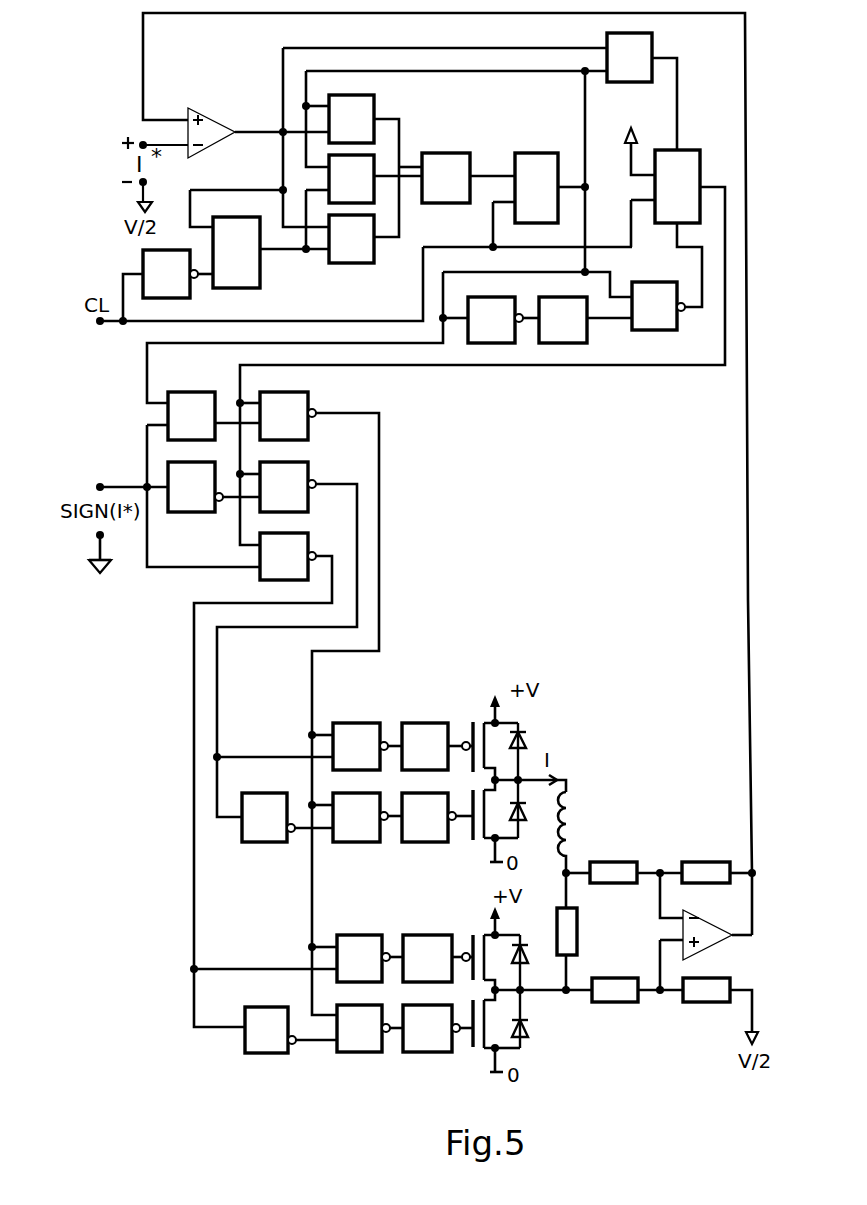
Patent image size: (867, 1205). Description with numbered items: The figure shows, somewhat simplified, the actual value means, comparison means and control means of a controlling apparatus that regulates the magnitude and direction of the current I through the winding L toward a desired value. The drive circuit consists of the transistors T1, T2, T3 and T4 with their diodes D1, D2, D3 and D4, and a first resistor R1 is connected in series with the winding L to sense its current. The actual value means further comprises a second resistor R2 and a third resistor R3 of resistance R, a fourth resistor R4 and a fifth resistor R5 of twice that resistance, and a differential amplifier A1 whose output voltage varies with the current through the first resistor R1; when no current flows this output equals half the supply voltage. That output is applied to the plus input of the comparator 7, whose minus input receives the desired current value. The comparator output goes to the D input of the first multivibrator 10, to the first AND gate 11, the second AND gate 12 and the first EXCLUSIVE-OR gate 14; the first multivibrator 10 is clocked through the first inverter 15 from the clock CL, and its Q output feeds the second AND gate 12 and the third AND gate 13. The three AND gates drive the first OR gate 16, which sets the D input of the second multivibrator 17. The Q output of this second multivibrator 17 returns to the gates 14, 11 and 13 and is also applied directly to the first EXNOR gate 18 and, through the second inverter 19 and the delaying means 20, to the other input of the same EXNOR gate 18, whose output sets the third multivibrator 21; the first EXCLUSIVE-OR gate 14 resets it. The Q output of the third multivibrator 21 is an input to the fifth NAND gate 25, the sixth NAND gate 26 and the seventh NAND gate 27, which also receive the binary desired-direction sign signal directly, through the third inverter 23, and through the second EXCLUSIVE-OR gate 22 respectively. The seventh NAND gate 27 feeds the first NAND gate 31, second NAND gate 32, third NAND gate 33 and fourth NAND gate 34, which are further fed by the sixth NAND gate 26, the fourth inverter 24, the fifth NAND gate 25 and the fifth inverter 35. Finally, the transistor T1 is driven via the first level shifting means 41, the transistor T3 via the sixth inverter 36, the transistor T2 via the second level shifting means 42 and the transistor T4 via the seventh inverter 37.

The comparator 7 is at (212, 112).
The first multivibrator 10 is at (250, 268).
The first AND gate 11 is at (362, 113).
The second AND gate 12 is at (368, 253).
The third AND gate 13 is at (368, 163).
The first EXCLUSIVE-OR gate 14 is at (648, 55).
The first inverter 15 is at (174, 284).
The first OR gate 16 is at (440, 157).
The second multivibrator 17 is at (538, 165).
The first EXNOR gate 18 is at (664, 330).
The second inverter 19 is at (499, 345).
The delaying means 20 is at (578, 345).
The third multivibrator 21 is at (694, 165).
The second EXCLUSIVE-OR gate 22 is at (186, 395).
The third inverter 23 is at (205, 502).
The fourth inverter 24 is at (274, 834).
The fifth NAND gate 25 is at (300, 548).
The sixth NAND gate 26 is at (300, 478).
The seventh NAND gate 27 is at (300, 410).
The first NAND gate 31 is at (367, 735).
The second NAND gate 32 is at (374, 834).
The third NAND gate 33 is at (350, 932).
The fourth NAND gate 34 is at (372, 1046).
The fifth inverter 35 is at (276, 1046).
The sixth inverter 36 is at (434, 834).
The seventh inverter 37 is at (418, 1046).
The first level shifting means 41 is at (420, 733).
The second level shifting means 42 is at (418, 932).
The transistor T1 is at (476, 715).
The transistor T2 is at (472, 935).
The transistor T3 is at (478, 842).
The transistor T4 is at (478, 1050).
The diode D1 is at (526, 740).
The diode D2 is at (528, 954).
The diode D3 is at (526, 815).
The diode D4 is at (528, 1030).
The winding L is at (585, 818).
The first resistor R1 is at (575, 930).
The second resistor R2 is at (612, 870).
The third resistor R3 is at (618, 1002).
The fourth resistor R4 is at (704, 870).
The fifth resistor R5 is at (708, 1002).
The differential amplifier A1 is at (715, 948).